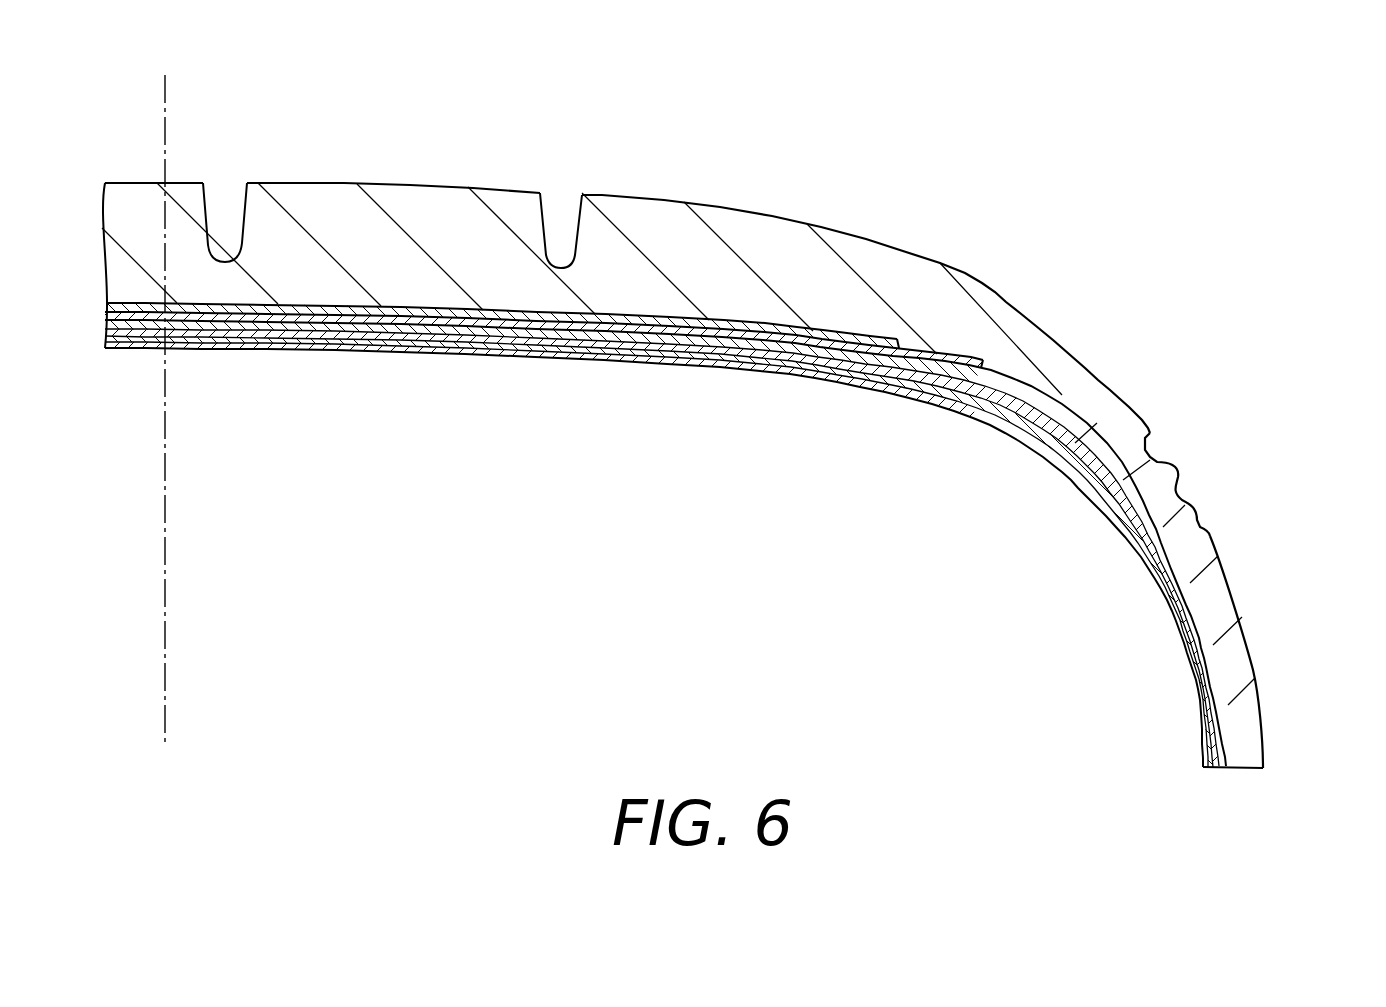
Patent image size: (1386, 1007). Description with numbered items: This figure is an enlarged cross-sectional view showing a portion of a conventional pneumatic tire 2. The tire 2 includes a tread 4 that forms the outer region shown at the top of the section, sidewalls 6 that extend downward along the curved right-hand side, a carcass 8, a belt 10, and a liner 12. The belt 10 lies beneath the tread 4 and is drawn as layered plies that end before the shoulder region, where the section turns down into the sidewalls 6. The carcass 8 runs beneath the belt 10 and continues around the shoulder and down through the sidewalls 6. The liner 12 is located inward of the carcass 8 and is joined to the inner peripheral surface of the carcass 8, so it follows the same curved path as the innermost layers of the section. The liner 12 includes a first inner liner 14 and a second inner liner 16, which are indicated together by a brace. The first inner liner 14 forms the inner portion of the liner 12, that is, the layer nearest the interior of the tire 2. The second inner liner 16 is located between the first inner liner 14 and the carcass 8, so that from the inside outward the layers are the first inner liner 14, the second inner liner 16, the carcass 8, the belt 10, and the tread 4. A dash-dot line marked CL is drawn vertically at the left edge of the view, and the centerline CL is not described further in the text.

The pneumatic tire 2 is at (1180, 53).
The tread 4 is at (960, 255).
The sidewalls 6 is at (1275, 703).
The carcass 8 is at (1184, 567).
The belt 10 is at (819, 331).
The liner 12 is at (970, 496).
The first inner liner 14 is at (1077, 476).
The second inner liner 16 is at (1140, 526).
The tire equator line CL is at (162, 690).